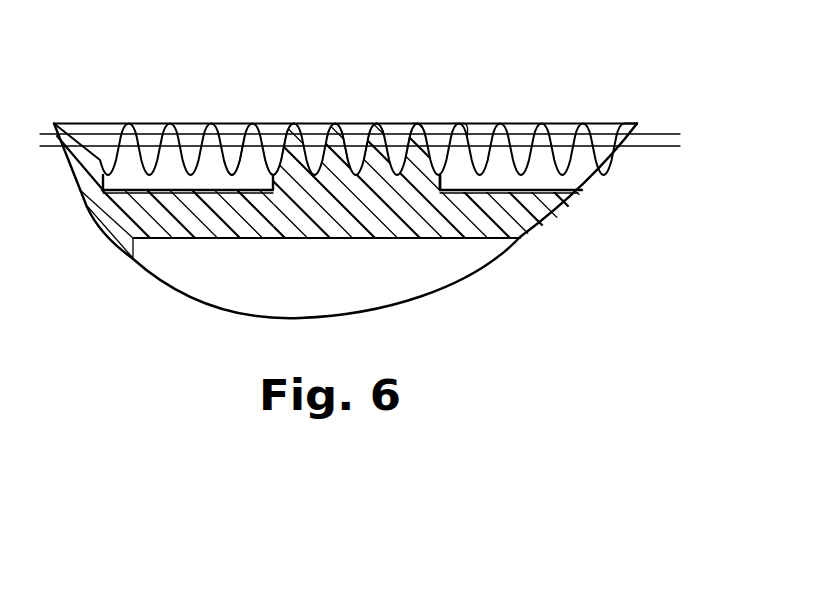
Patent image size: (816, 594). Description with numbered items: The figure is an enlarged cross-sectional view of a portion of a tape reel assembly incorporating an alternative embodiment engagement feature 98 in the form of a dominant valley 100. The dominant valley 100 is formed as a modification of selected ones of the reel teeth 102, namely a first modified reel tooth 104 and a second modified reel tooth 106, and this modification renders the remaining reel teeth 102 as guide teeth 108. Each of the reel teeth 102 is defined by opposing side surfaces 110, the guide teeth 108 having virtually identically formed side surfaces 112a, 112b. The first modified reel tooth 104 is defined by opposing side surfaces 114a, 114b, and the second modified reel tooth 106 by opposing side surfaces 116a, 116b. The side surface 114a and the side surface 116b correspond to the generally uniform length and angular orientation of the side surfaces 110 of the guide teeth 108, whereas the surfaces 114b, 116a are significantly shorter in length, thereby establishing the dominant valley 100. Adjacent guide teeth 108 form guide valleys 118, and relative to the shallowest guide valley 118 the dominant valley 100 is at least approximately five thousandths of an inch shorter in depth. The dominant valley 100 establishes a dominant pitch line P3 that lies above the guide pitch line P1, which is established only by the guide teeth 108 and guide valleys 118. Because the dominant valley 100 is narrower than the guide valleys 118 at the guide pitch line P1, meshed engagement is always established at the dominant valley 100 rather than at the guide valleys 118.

The engagement feature 98 is at (369, 62).
The dominant valley 100 is at (362, 121).
The reel teeth 102 is at (431, 136).
The first modified reel tooth 104 is at (338, 159).
The second modified reel tooth 106 is at (374, 154).
The guide teeth 108 is at (249, 159).
The side surfaces 110 is at (242, 137).
The side surface 112a is at (443, 186).
The side surface 112b is at (478, 165).
The side surface 114a is at (290, 180).
The side surface 114b is at (339, 155).
The side surface 116a is at (373, 157).
The side surface 116b is at (407, 150).
The guide valleys 118 is at (278, 152).
The guide pitch line P1 is at (652, 148).
The dominant pitch line P3 is at (656, 131).